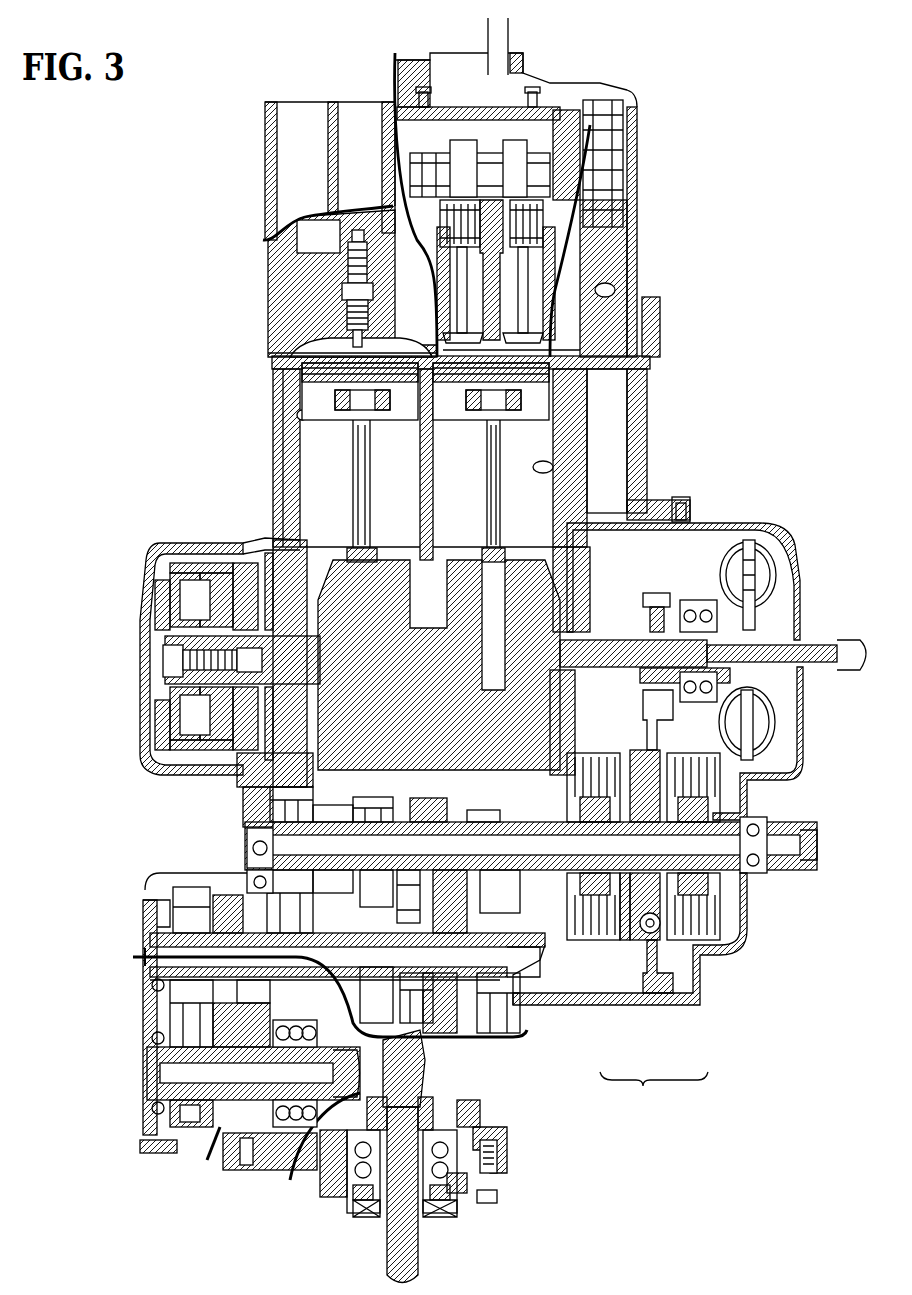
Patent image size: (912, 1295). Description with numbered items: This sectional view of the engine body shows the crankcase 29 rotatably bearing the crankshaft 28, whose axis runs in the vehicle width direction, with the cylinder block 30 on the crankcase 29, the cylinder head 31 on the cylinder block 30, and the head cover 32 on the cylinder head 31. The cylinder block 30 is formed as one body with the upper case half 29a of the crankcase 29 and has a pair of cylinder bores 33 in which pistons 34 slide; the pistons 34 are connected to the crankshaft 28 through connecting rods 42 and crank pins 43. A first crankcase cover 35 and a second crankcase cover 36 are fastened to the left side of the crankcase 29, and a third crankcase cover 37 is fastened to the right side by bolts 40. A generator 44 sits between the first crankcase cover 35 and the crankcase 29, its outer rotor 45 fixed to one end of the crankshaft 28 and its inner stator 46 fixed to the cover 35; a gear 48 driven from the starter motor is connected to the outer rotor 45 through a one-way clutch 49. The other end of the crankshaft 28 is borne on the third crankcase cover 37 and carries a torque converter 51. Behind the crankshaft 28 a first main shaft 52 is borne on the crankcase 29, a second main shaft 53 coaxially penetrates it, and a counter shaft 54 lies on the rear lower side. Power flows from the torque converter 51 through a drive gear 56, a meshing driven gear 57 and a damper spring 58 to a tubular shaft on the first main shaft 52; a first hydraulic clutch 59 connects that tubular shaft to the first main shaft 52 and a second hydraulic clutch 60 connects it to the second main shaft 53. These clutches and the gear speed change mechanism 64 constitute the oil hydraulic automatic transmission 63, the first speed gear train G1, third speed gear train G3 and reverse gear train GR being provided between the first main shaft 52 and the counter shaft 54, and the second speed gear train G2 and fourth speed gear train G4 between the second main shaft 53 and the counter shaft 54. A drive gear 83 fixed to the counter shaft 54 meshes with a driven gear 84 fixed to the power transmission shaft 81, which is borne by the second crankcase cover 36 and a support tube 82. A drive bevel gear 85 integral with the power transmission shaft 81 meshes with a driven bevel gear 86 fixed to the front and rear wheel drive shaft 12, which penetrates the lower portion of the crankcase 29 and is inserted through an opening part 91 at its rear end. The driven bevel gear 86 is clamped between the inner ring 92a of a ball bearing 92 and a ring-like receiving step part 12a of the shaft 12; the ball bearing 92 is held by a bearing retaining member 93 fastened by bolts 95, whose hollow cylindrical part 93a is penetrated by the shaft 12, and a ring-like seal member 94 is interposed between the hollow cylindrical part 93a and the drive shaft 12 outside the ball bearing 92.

The front and rear wheel drive shaft 12 is at (388, 1243).
The ring-like receiving step part 12a is at (472, 1113).
The crankshaft 28 is at (567, 603).
The crankcase 29 is at (238, 812).
The upper case half 29a is at (243, 787).
The cylinder block 30 is at (282, 472).
The cylinder head 31 is at (290, 322).
The head cover 32 is at (630, 128).
The cylinder bores 33 is at (297, 417).
The pistons 34 is at (300, 358).
The first crankcase cover 35 is at (162, 550).
The second crankcase cover 36 is at (153, 905).
The third crankcase cover 37 is at (795, 567).
The bolts 40 is at (688, 505).
The connecting rods 42 is at (358, 462).
The crank pins 43 is at (357, 548).
The generator 44 is at (192, 563).
The outer rotor 45 is at (213, 563).
The inner stator 46 is at (168, 593).
The gear 48 is at (266, 553).
The one-way clutch 49 is at (177, 723).
The torque converter 51 is at (716, 552).
The first main shaft 52 is at (490, 822).
The second main shaft 53 is at (537, 942).
The counter shaft 54 is at (223, 927).
The drive gear 56 is at (655, 593).
The driven gear 57 is at (645, 722).
The damper spring 58 is at (700, 903).
The first hydraulic clutch 59 is at (600, 755).
The second hydraulic clutch 60 is at (720, 798).
The oil hydraulic automatic transmission 63 is at (654, 1094).
The gear speed change mechanism 64 is at (537, 980).
The power transmission shaft 81 is at (243, 1100).
The support tube 82 is at (333, 955).
The drive gear 83 is at (193, 893).
The driven gear 84 is at (200, 1127).
The drive bevel gear 85 is at (395, 1050).
The driven bevel gear 86 is at (507, 1133).
The opening part 91 is at (462, 1173).
The ball bearing 92 is at (340, 1175).
The inner ring 92a is at (400, 1112).
The bearing retaining member 93 is at (355, 1197).
The hollow cylindrical part 93a is at (462, 1193).
The ring-like seal member 94 is at (440, 1215).
The bolts 95 is at (498, 1197).
The first speed gear train G1 is at (510, 990).
The second speed gear train G2 is at (360, 797).
The third speed gear train G3 is at (443, 1015).
The fourth speed gear train G4 is at (300, 785).
The reverse gear train GR is at (407, 873).